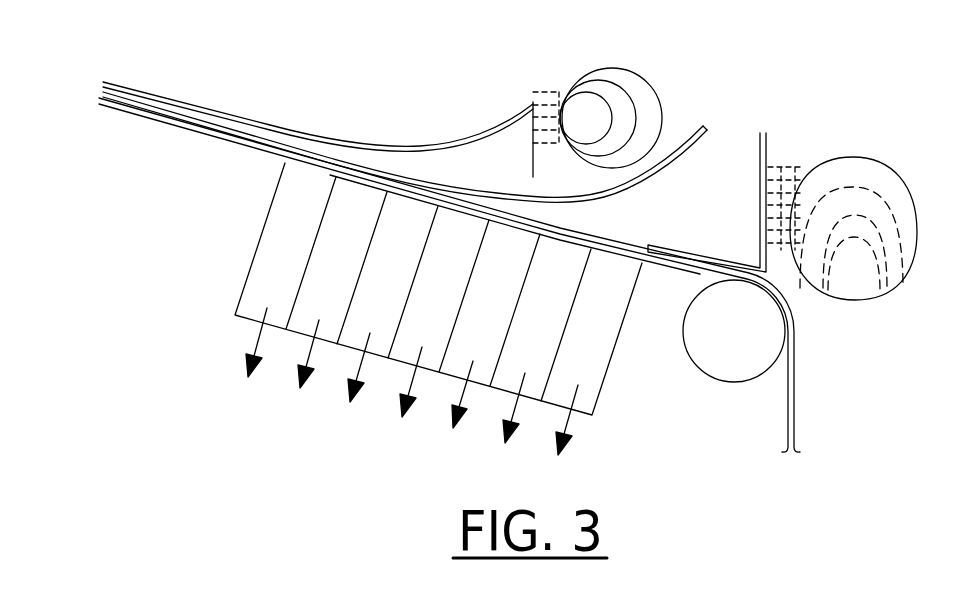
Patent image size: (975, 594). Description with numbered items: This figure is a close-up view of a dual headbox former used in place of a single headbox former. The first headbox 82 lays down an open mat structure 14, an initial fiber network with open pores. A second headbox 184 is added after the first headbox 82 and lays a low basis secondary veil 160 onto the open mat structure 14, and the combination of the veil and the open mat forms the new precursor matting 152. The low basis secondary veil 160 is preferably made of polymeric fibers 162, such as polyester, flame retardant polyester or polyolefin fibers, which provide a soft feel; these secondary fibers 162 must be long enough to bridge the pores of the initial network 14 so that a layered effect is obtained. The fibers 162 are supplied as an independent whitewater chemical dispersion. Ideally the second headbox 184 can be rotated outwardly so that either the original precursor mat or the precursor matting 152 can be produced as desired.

The precursor matting 152 is at (95, 91).
The low basis secondary veil 160 is at (190, 102).
The polymeric fibers 162 is at (237, 113).
The open mat structure 14 is at (177, 128).
The second headbox 184 is at (635, 72).
The first headbox 82 is at (862, 156).